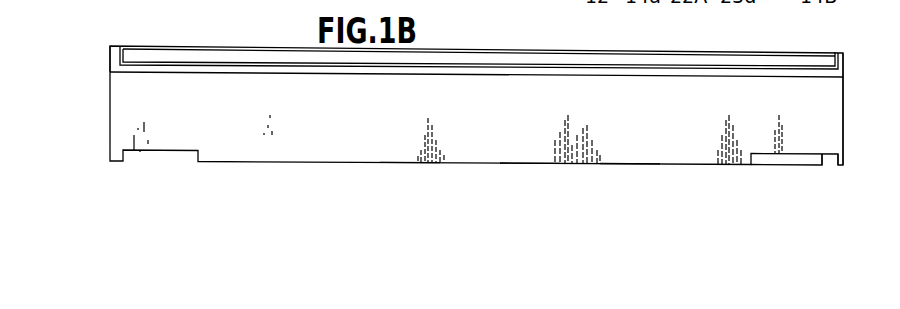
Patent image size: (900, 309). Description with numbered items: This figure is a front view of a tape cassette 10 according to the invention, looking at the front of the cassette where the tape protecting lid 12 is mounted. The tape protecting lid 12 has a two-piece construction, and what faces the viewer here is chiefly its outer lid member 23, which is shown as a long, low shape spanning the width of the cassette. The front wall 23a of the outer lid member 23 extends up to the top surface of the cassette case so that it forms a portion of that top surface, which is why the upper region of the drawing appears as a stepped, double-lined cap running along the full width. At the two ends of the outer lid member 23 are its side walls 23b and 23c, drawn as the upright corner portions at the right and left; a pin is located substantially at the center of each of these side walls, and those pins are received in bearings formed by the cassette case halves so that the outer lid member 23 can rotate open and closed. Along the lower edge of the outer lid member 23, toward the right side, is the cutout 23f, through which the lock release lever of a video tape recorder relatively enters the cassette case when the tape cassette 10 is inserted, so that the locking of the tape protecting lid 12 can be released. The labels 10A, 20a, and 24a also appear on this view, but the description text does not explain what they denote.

The tape cassette 10 is at (760, 42).
The bottom wall of cartridge 10A is at (627, 158).
The tape protecting lid 12 is at (844, 100).
The cover inner surface 20a is at (479, 30).
The outer lid member 23 is at (412, 159).
The front wall 23a is at (531, 159).
The side wall 23b is at (843, 53).
The side wall 23c is at (112, 46).
The cutout 23f is at (830, 166).
The cover plate 24a is at (620, 51).